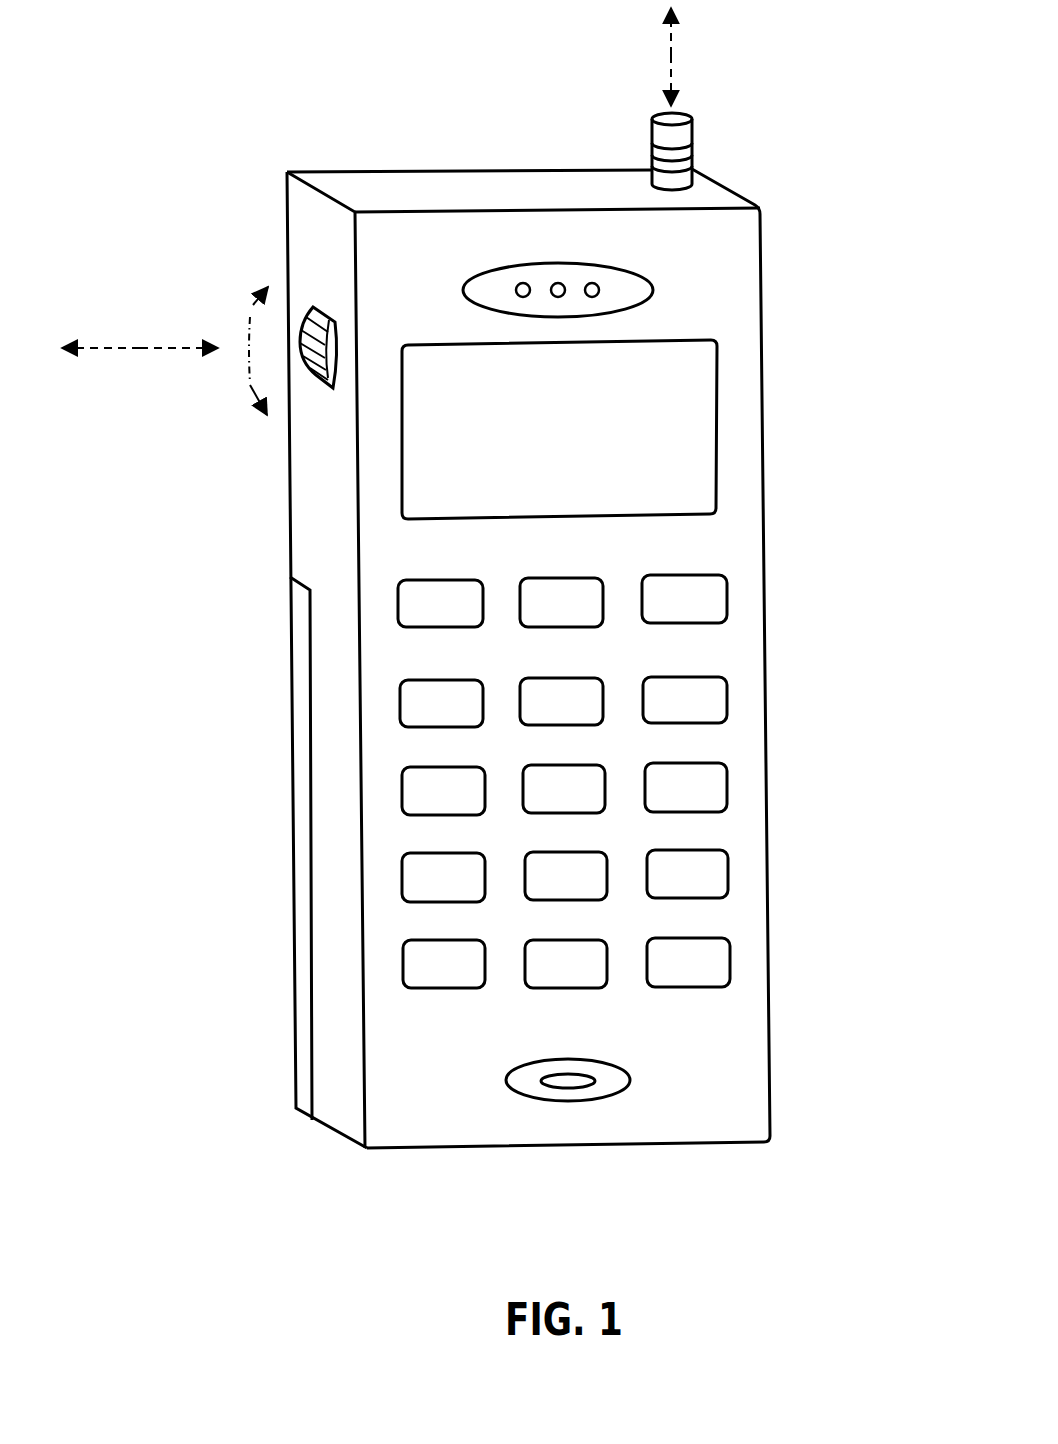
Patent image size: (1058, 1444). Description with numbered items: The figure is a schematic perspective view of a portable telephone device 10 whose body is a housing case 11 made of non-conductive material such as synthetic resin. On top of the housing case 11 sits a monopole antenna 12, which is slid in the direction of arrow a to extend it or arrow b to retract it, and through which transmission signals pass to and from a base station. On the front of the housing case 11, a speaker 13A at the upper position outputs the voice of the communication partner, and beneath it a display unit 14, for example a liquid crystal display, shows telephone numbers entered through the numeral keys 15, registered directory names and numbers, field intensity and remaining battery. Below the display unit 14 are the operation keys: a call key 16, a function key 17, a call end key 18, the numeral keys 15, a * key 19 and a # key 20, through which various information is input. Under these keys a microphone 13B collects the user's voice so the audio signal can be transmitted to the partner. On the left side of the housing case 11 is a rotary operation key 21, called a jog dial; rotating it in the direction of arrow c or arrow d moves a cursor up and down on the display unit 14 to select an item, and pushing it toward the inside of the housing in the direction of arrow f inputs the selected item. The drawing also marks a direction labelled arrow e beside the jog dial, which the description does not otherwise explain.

The portable telephone device 10 is at (902, 158).
The housing case 11 is at (745, 303).
The monopole antenna 12 is at (692, 147).
The speaker 13A is at (546, 263).
The microphone 13B is at (572, 1088).
The display unit 14 is at (705, 435).
The numeral keys 15 is at (742, 830).
The call key 16 is at (432, 578).
The function key 17 is at (552, 577).
The call end key 18 is at (725, 602).
The * key 19 is at (428, 990).
The # key 20 is at (730, 958).
The rotary operation key 21 is at (312, 307).
The arrow a is at (676, 30).
The arrow b is at (676, 72).
The arrow c is at (250, 317).
The arrow d is at (250, 383).
The dial push direction e is at (110, 350).
The arrow f is at (167, 348).